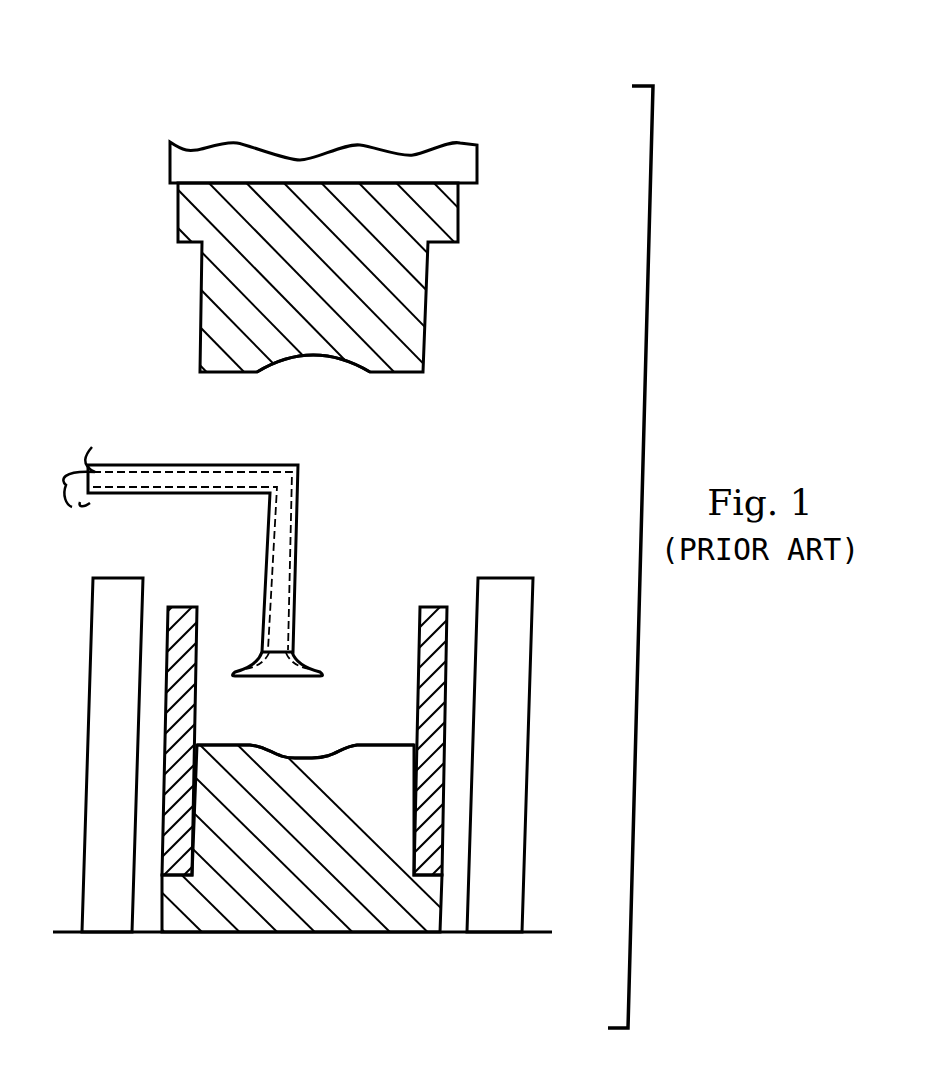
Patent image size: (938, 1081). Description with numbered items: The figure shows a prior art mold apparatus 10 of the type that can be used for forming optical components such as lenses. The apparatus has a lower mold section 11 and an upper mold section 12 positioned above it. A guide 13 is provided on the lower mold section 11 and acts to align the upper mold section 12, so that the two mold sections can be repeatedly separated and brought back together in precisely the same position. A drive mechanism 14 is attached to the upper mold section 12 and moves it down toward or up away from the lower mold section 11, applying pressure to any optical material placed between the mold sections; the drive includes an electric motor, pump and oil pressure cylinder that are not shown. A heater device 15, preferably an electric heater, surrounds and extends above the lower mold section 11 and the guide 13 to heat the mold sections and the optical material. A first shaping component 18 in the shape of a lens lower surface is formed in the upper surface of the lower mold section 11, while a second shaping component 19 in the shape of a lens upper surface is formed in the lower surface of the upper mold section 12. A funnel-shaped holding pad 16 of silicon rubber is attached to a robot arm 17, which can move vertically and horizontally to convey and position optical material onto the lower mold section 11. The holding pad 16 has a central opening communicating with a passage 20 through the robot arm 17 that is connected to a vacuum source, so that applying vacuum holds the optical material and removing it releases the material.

The mold apparatus 10 is at (100, 84).
The lower mold section 11 is at (307, 913).
The upper mold section 12 is at (422, 290).
The guide 13 is at (430, 607).
The drive mechanism 14 is at (468, 164).
The heater device 15 is at (112, 908).
The holding pad 16 is at (305, 657).
The robot arm 17 is at (193, 465).
The first shaping component 18 is at (310, 757).
The second shaping component 19 is at (330, 360).
The passage 20 is at (80, 497).